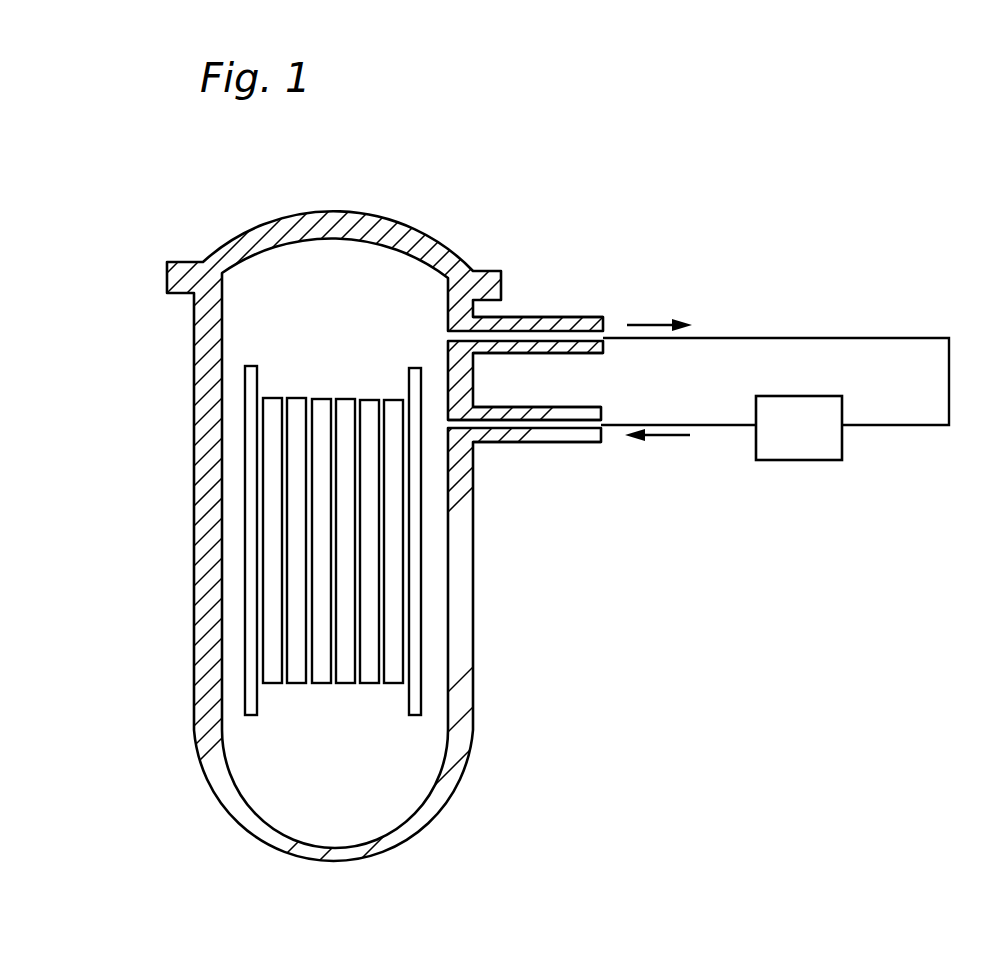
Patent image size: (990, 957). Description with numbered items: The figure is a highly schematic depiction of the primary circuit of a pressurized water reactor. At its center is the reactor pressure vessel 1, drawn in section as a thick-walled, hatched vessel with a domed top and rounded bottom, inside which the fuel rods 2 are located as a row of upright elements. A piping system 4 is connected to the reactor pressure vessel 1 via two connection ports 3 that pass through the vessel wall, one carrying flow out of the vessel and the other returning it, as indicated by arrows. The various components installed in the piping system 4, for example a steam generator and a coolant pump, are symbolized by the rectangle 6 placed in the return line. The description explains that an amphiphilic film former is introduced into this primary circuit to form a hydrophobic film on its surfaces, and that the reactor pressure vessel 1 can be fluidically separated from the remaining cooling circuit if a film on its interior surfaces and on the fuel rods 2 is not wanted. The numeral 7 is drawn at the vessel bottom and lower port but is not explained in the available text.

The reactor pressure vessel 1 is at (460, 703).
The fuel rods 2 is at (320, 675).
The connection ports 3 is at (528, 338).
The piping system 4 is at (775, 332).
The rectangle 6 is at (790, 460).
The inner cladding 7 is at (600, 425).